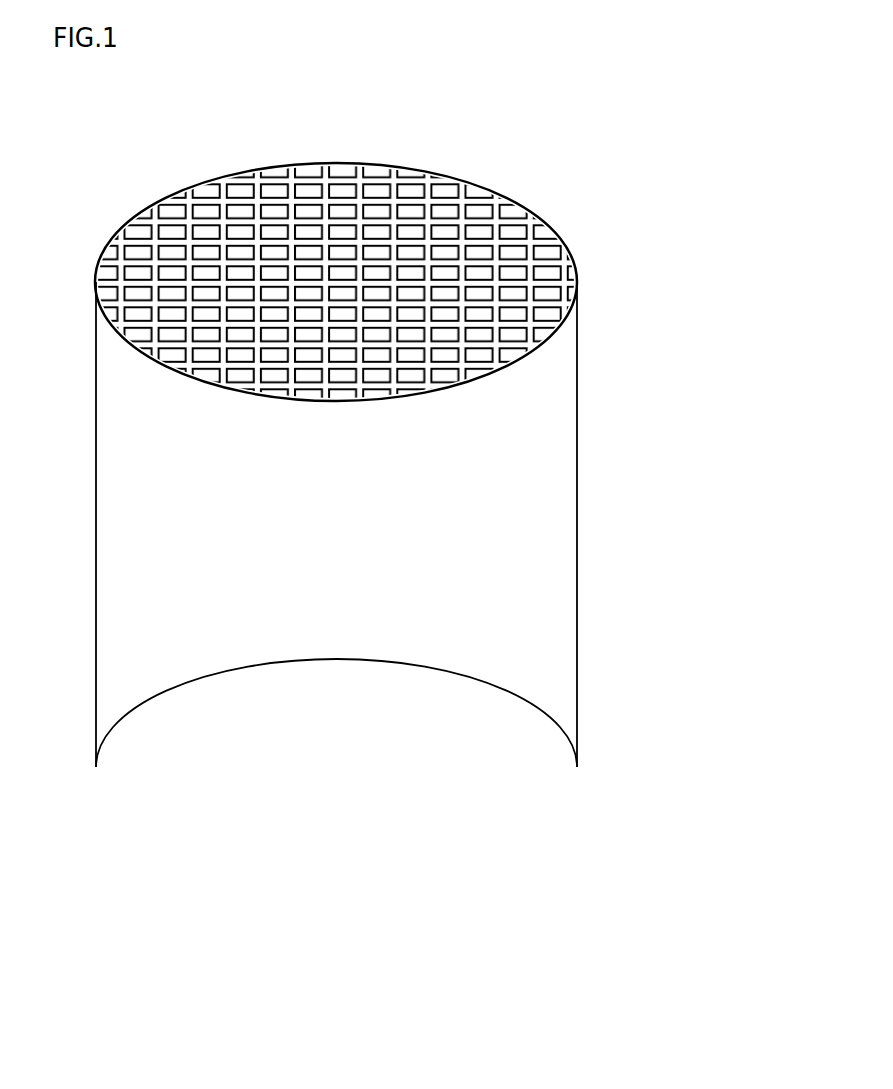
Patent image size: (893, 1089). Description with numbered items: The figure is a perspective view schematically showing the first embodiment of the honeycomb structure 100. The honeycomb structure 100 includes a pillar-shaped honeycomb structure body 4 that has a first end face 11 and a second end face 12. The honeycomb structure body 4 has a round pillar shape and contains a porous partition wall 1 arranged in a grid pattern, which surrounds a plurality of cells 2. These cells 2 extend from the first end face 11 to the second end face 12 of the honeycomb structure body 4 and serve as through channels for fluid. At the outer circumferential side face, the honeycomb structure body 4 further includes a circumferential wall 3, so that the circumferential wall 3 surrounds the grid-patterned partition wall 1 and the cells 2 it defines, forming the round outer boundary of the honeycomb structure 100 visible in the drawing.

The honeycomb structure 100 is at (742, 98).
The partition wall 1 is at (463, 238).
The cells 2 is at (352, 258).
The circumferential wall 3 is at (393, 520).
The honeycomb structure body 4 is at (583, 336).
The first end face 11 is at (350, 254).
The second end face 12 is at (128, 830).